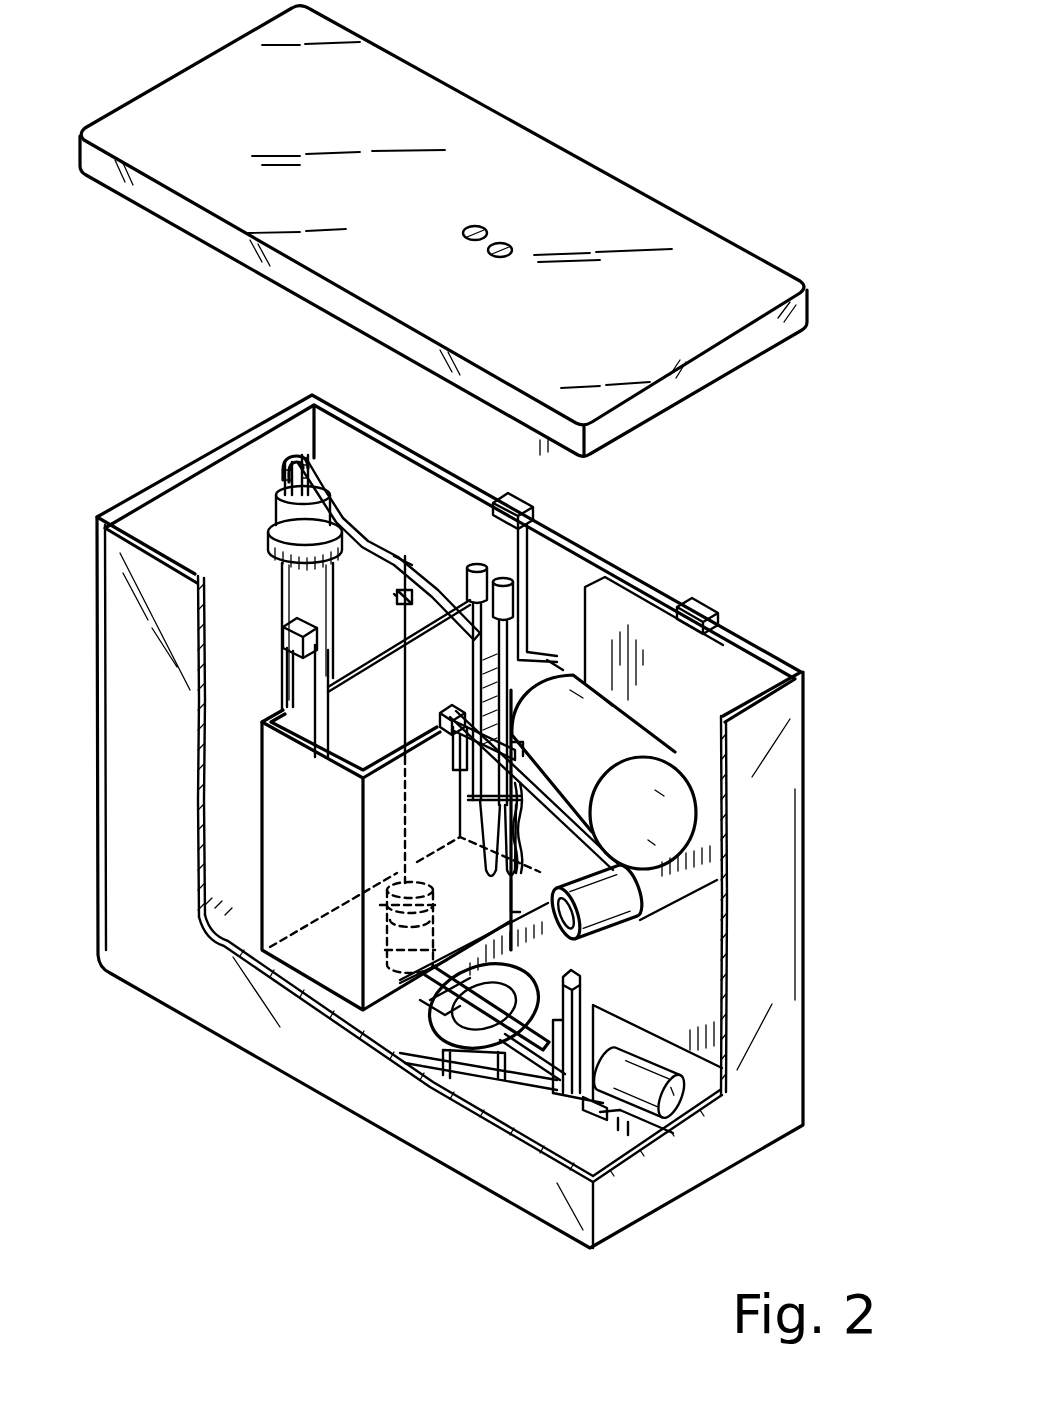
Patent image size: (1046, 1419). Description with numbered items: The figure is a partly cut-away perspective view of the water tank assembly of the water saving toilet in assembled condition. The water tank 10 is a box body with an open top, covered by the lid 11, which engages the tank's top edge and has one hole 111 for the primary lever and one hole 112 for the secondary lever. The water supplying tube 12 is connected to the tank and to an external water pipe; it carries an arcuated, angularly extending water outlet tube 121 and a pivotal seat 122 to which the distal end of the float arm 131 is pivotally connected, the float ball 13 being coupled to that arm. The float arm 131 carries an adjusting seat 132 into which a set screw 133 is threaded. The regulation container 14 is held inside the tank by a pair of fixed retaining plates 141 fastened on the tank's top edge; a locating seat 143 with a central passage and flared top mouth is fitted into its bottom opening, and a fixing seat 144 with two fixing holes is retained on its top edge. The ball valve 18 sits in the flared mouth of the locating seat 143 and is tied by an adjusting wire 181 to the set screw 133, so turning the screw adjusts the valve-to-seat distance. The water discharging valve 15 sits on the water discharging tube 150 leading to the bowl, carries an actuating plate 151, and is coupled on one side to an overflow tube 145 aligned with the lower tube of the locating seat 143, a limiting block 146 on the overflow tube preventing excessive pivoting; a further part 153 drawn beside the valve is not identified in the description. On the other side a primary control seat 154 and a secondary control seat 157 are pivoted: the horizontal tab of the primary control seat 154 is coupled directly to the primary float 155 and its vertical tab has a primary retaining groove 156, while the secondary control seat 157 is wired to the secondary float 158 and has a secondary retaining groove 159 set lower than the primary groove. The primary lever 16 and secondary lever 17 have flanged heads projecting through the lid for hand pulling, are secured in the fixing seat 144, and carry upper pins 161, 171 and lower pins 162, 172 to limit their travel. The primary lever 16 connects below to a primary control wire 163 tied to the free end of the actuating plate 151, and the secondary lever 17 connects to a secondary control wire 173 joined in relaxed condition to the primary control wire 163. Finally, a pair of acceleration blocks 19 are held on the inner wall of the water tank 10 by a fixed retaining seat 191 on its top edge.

The water tank 10 is at (799, 939).
The lid 11 is at (648, 208).
The hole for primary lever 111 is at (498, 243).
The hole for secondary lever 112 is at (473, 227).
The water supplying tube 12 is at (290, 582).
The water outlet tube 121 is at (280, 470).
The pivotal seat 122 is at (297, 456).
The float ball 13 is at (662, 750).
The float arm 131 is at (362, 540).
The adjusting seat 132 is at (395, 552).
The set screw 133 is at (396, 598).
The regulation container 14 is at (273, 802).
The fixed retaining plates 141 is at (307, 682).
The locating seat 143 is at (388, 910).
The fixing seat 144 is at (452, 712).
The overflow tube 145 is at (388, 953).
The limiting block 146 is at (445, 1012).
The water discharging valve 15 is at (472, 1032).
The water discharging tube 150 is at (530, 1085).
The actuating plate 151 is at (495, 1060).
The pump base 153 is at (567, 1093).
The primary control seat 154 is at (630, 1133).
The primary float 155 is at (683, 1103).
The primary retaining groove 156 is at (570, 968).
The secondary control seat 157 is at (567, 1095).
The secondary float 158 is at (620, 893).
The secondary retaining groove 159 is at (580, 998).
The primary lever 16 is at (527, 580).
The upper pin of primary lever 161 is at (531, 771).
The lower pin of primary lever 162 is at (519, 850).
The primary control wire 163 is at (512, 910).
The secondary lever 17 is at (477, 563).
The upper pin of secondary lever 171 is at (466, 795).
The lower pin of secondary lever 172 is at (486, 860).
The secondary control wire 173 is at (487, 817).
The ball valve 18 is at (404, 861).
The adjusting wire 181 is at (404, 723).
The acceleration blocks 19 is at (657, 610).
The fixed retaining seat 191 is at (703, 605).